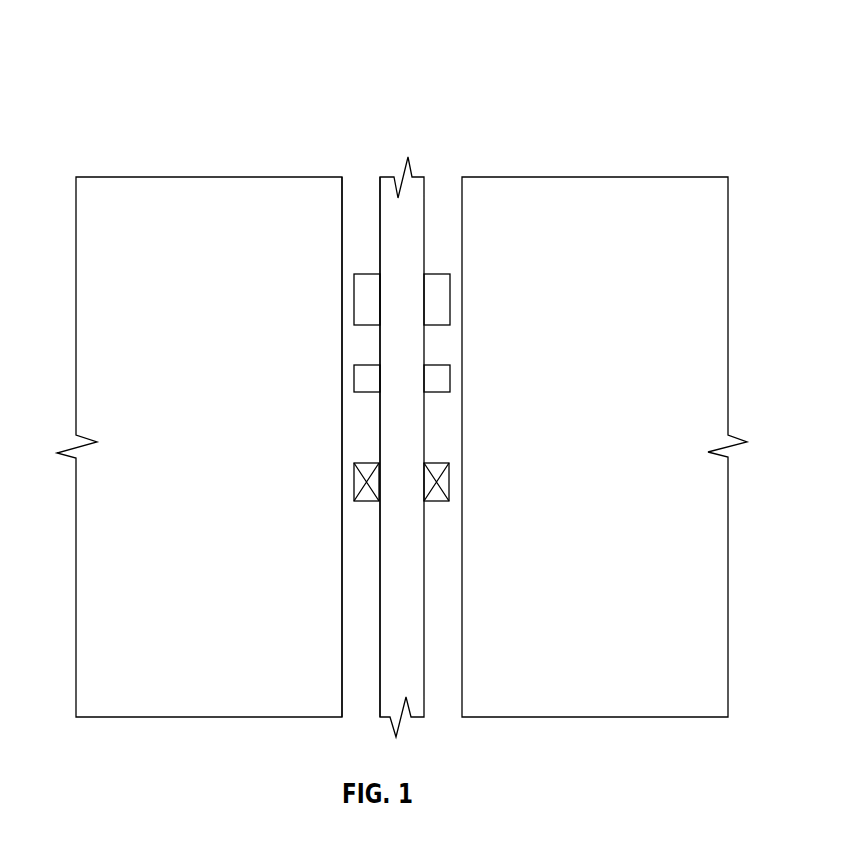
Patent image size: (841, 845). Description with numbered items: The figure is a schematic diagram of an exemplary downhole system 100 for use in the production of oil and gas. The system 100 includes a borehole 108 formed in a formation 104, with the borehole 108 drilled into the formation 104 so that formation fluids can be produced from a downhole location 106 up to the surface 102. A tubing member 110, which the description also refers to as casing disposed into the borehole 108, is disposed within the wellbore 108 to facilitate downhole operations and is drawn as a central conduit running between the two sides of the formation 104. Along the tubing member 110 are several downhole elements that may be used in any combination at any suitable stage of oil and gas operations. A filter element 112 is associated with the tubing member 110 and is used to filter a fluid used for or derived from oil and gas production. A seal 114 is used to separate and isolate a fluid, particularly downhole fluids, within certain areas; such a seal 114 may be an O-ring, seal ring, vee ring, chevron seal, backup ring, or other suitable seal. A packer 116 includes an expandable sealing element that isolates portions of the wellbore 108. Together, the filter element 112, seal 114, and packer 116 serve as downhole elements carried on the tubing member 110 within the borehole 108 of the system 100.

The downhole system 100 is at (134, 46).
The surface 102 is at (652, 177).
The formation 104 is at (99, 335).
The downhole location 106 is at (353, 612).
The borehole 108 is at (463, 298).
The tubing member 110 is at (425, 258).
The filter element 112 is at (354, 300).
The seal 114 is at (450, 375).
The packer 116 is at (449, 481).